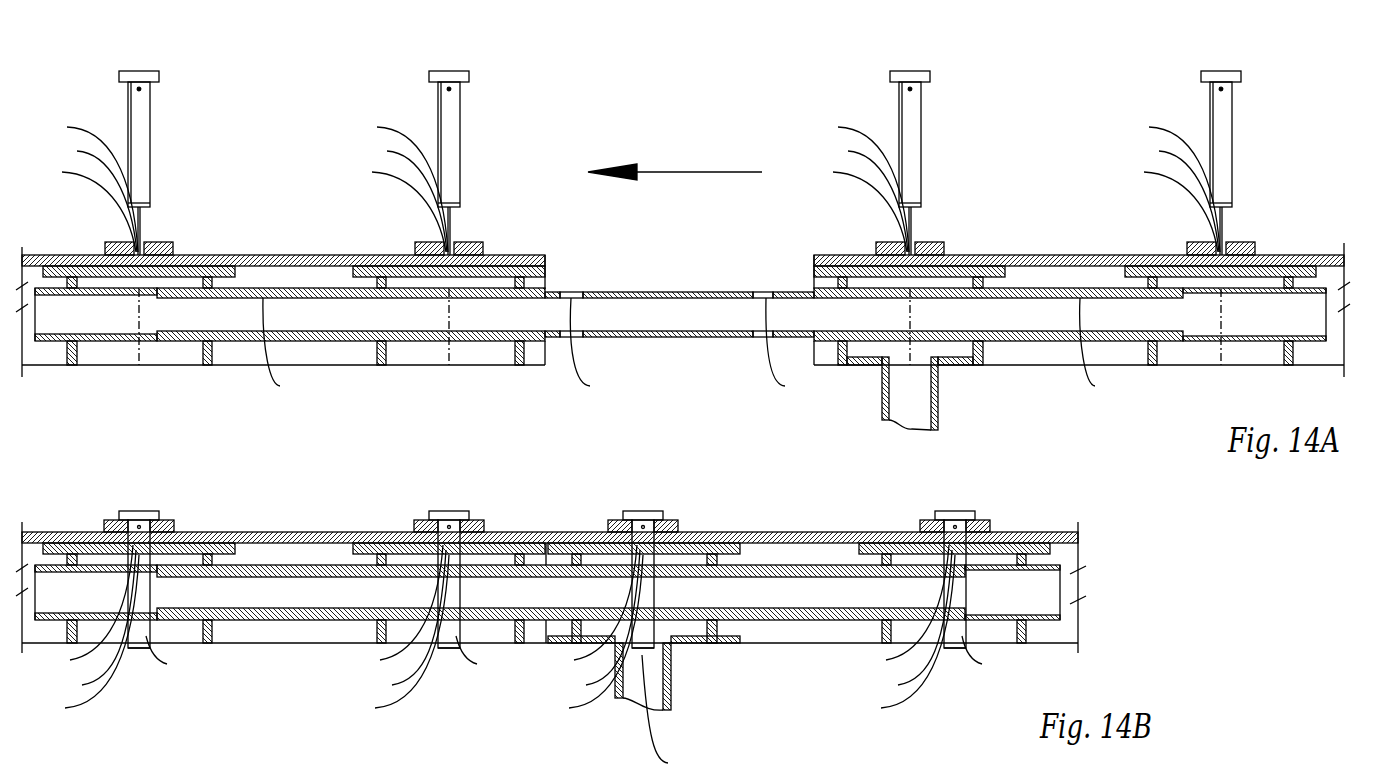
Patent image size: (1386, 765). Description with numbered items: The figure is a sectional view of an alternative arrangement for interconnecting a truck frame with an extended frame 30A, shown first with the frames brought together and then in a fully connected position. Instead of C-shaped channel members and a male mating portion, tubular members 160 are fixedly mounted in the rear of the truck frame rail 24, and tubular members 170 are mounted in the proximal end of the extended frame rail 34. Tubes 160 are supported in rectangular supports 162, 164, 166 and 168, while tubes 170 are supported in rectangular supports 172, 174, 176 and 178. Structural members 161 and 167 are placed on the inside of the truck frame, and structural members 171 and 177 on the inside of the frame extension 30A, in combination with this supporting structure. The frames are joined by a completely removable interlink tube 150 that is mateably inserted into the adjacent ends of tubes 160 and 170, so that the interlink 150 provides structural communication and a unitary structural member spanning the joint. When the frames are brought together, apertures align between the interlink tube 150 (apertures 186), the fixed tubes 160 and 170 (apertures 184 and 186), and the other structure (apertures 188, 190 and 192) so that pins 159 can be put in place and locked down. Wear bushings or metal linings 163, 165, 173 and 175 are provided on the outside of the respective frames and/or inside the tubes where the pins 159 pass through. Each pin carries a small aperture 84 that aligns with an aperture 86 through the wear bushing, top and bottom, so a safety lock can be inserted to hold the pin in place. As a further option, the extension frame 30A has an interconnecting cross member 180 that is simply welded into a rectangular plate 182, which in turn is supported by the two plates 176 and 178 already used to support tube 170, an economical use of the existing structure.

In FIG. 14A, the frame rail 24 is at (298, 255).
In FIG. 14B, the frame rail 24 is at (298, 532).
In FIG. 14A, the frame rail 34 is at (1316, 255).
In FIG. 14B, the frame rail 34 is at (850, 532).
In FIG. 14A, the extended frame 30A is at (1066, 236).
In FIG. 14B, the extended frame 30A is at (804, 516).
In FIG. 14A, the aperture 84 is at (138, 89).
In FIG. 14B, the aperture 84 is at (141, 525).
In FIG. 14A, the aperture 86 is at (144, 252).
In FIG. 14B, the aperture 86 is at (547, 587).
In FIG. 14A, the interlink tube 150 is at (700, 292).
In FIG. 14B, the interlink tube 150 is at (330, 610).
In FIG. 14A, the pin 159 is at (145, 112).
In FIG. 14B, the pin 159 is at (132, 510).
In FIG. 14A, the tubular member 160 is at (318, 292).
In FIG. 14B, the tubular member 160 is at (316, 565).
In FIG. 14A, the structural member 161 is at (180, 255).
In FIG. 14B, the structural member 161 is at (178, 532).
In FIG. 14A, the rectangular support 162 is at (70, 255).
In FIG. 14B, the rectangular support 162 is at (70, 532).
In FIG. 14A, the wear bushing 163 is at (117, 255).
In FIG. 14B, the wear bushing 163 is at (112, 520).
In FIG. 14A, the rectangular support 164 is at (215, 262).
In FIG. 14B, the rectangular support 164 is at (215, 543).
In FIG. 14A, the wear bushing 165 is at (424, 244).
In FIG. 14B, the wear bushing 165 is at (424, 520).
In FIG. 14A, the rectangular support 166 is at (385, 268).
In FIG. 14B, the rectangular support 166 is at (392, 543).
In FIG. 14A, the structural member 167 is at (496, 255).
In FIG. 14B, the structural member 167 is at (497, 543).
In FIG. 14A, the rectangular support 168 is at (527, 266).
In FIG. 14B, the rectangular support 168 is at (527, 543).
In FIG. 14A, the tubular member 170 is at (1088, 255).
In FIG. 14B, the tubular member 170 is at (810, 565).
In FIG. 14A, the structural member 171 is at (1314, 255).
In FIG. 14B, the structural member 171 is at (1000, 532).
In FIG. 14A, the rectangular support 172 is at (1290, 365).
In FIG. 14B, the rectangular support 172 is at (1028, 643).
In FIG. 14A, the wear bushing 173 is at (1266, 255).
In FIG. 14B, the wear bushing 173 is at (988, 520).
In FIG. 14A, the rectangular support 174 is at (1153, 256).
In FIG. 14B, the rectangular support 174 is at (888, 543).
In FIG. 14A, the wear bushing 175 is at (890, 244).
In FIG. 14B, the wear bushing 175 is at (622, 520).
In FIG. 14A, the rectangular support 176 is at (985, 266).
In FIG. 14B, the rectangular support 176 is at (720, 543).
In FIG. 14A, the structural member 177 is at (948, 255).
In FIG. 14B, the structural member 177 is at (686, 532).
In FIG. 14A, the rectangular support 178 is at (842, 277).
In FIG. 14B, the rectangular support 178 is at (576, 554).
In FIG. 14A, the cross member 180 is at (940, 402).
In FIG. 14B, the cross member 180 is at (672, 683).
In FIG. 14A, the rectangular plate 182 is at (955, 362).
In FIG. 14B, the rectangular plate 182 is at (688, 643).
In FIG. 14A, the aperture 184 is at (137, 300).
In FIG. 14B, the aperture 184 is at (148, 612).
In FIG. 14A, the aperture 186 is at (694, 348).
In FIG. 14B, the aperture 186 is at (579, 700).
In FIG. 14A, the aperture 188 is at (624, 206).
In FIG. 14B, the aperture 188 is at (495, 638).
In FIG. 14A, the aperture 190 is at (632, 195).
In FIG. 14B, the aperture 190 is at (502, 624).
In FIG. 14A, the aperture 192 is at (627, 183).
In FIG. 14B, the aperture 192 is at (494, 609).